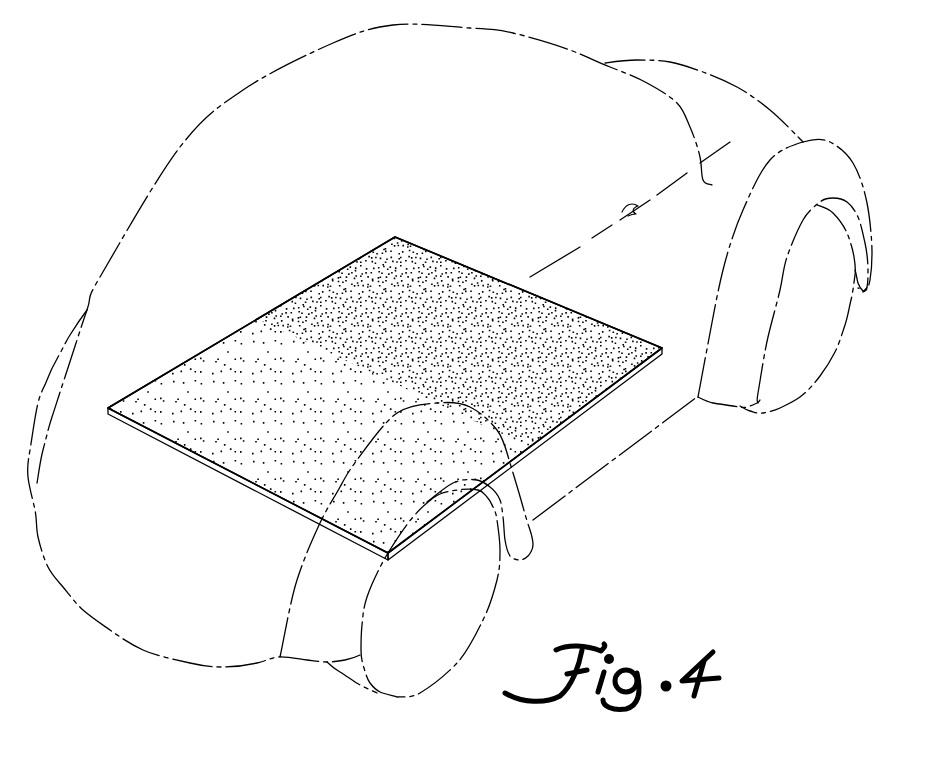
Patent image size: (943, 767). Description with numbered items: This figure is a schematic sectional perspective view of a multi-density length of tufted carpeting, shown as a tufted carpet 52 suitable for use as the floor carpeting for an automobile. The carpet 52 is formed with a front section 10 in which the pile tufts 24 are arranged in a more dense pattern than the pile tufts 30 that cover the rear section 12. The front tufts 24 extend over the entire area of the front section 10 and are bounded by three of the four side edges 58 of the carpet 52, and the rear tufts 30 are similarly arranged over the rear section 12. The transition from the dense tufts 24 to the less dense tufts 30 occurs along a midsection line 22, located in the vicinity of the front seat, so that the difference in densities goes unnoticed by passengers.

The front section 10 is at (394, 395).
The rear section 12 is at (352, 447).
The midsection line 22 is at (584, 410).
The pile tufts 24 is at (597, 330).
The pile tufts 30 is at (203, 418).
The tufted carpet 52 is at (522, 268).
The side edges 58 is at (140, 389).